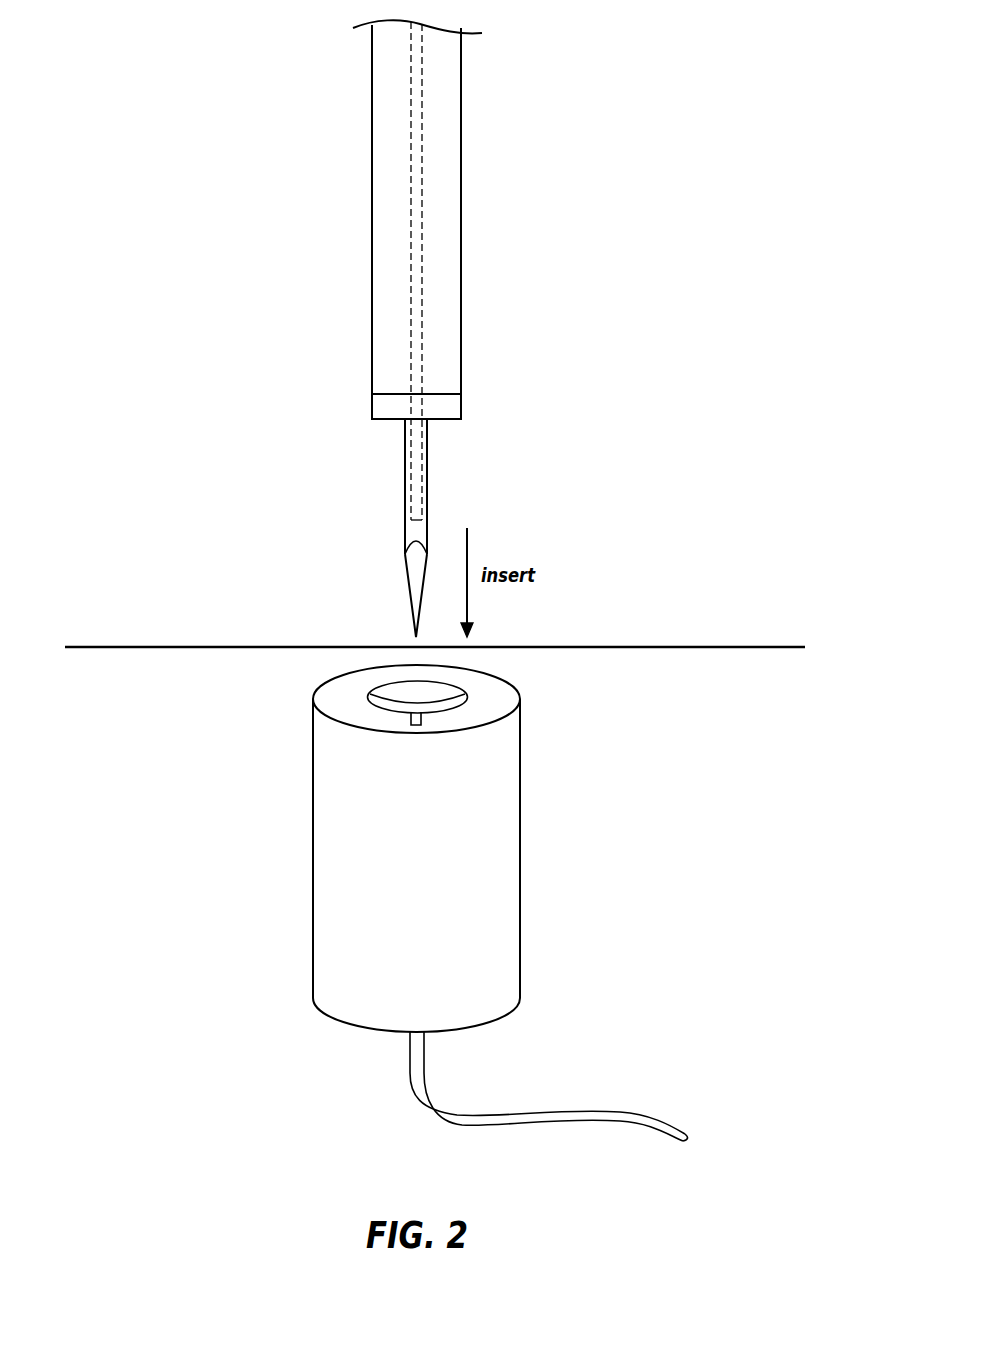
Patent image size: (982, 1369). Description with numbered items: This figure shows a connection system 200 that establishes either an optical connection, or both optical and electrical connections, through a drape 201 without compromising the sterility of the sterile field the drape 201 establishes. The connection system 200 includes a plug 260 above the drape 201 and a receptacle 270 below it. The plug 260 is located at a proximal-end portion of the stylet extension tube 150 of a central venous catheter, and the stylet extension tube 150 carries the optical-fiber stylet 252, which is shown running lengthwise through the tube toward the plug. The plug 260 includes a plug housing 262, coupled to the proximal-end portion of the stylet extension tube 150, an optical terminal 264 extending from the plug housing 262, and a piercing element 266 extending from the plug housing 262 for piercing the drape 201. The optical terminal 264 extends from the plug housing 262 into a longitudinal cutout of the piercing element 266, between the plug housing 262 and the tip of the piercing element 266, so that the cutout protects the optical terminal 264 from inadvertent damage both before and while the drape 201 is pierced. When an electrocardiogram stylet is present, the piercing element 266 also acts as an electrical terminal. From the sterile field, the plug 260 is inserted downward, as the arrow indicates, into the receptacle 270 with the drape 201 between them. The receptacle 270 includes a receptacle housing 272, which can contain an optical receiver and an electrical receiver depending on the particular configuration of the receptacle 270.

The stylet extension tube 150 is at (384, 80).
The optical-fiber stylet 252 is at (412, 294).
The plug housing 262 is at (450, 407).
The optical terminal 264 is at (430, 460).
The piercing element 266 is at (416, 558).
The plug 260 is at (194, 403).
The connection system 200 is at (738, 330).
The drape 201 is at (157, 648).
The receptacle 270 is at (455, 903).
The receptacle housing 272 is at (341, 918).